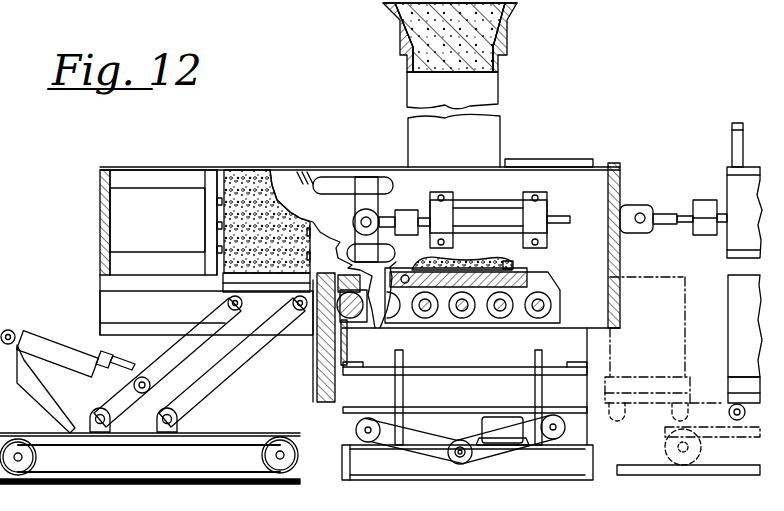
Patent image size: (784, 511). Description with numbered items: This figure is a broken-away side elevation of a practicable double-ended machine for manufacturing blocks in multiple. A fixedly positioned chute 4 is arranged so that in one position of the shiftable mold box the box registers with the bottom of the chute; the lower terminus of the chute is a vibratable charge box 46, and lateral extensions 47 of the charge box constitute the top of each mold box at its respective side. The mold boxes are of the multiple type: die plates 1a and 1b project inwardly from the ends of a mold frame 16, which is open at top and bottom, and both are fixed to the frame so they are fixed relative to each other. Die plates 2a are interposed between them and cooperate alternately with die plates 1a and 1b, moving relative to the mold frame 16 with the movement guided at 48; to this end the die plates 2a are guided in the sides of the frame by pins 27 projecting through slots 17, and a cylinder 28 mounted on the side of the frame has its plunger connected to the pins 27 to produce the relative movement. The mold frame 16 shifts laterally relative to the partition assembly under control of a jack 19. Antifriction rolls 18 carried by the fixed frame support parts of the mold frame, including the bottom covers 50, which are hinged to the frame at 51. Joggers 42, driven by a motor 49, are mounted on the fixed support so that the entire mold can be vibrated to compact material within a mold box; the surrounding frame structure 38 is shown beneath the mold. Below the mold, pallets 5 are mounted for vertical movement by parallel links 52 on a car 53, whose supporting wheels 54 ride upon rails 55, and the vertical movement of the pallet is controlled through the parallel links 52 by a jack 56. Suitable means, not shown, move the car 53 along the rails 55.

The die plate 1a is at (217, 168).
The die plate 1b is at (520, 264).
The die plate 2a is at (322, 238).
The chute 4 is at (499, 84).
The pallet 5 is at (223, 283).
The mold frame 16 is at (100, 207).
The slot 17 is at (322, 176).
The antifriction roll 18 is at (497, 320).
The jack 19 is at (733, 191).
The pin 27 is at (378, 176).
The cylinder 28 is at (478, 206).
The frame 38 is at (467, 404).
The jogger 42 is at (357, 430).
The charge box 46 is at (501, 135).
The lateral extension 47 is at (572, 159).
The guide 48 is at (113, 324).
The motor 49 is at (499, 417).
The bottom cover 50 is at (318, 386).
The hinge 51 is at (405, 284).
The parallel link 52 is at (197, 345).
The car 53 is at (200, 441).
The supporting wheel 54 is at (37, 462).
The rail 55 is at (112, 484).
The jack 56 is at (34, 343).